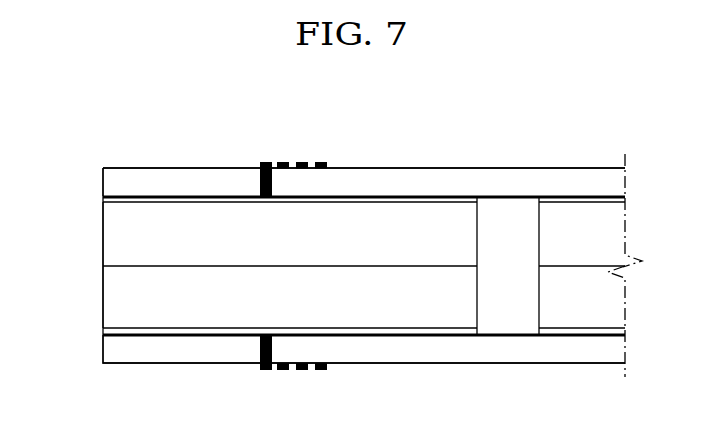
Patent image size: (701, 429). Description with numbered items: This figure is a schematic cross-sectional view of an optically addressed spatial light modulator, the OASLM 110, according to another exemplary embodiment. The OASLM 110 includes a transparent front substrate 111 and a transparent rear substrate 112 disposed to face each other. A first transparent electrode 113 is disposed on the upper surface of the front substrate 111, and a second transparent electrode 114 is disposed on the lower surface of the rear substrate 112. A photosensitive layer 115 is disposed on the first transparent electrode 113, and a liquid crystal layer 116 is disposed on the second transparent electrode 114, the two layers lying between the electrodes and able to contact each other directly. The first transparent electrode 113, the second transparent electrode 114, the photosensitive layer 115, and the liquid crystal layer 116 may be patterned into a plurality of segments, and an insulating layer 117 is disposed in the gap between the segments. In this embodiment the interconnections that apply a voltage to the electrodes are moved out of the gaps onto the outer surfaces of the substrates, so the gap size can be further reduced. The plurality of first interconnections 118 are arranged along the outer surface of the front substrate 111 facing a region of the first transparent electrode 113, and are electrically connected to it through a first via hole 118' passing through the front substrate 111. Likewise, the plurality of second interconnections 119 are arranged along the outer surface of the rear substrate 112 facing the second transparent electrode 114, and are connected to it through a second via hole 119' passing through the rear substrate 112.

The OASLM 110 is at (558, 119).
The front substrate 111 is at (136, 351).
The rear substrate 112 is at (128, 176).
The first transparent electrode 113 is at (112, 336).
The second transparent electrode 114 is at (113, 198).
The photosensitive layer 115 is at (114, 297).
The liquid crystal layer 116 is at (114, 240).
The insulating layer 117 is at (507, 320).
The first interconnections 118 is at (312, 390).
The first via hole 118' is at (247, 374).
The second interconnections 119 is at (308, 141).
The second via hole 119' is at (242, 155).